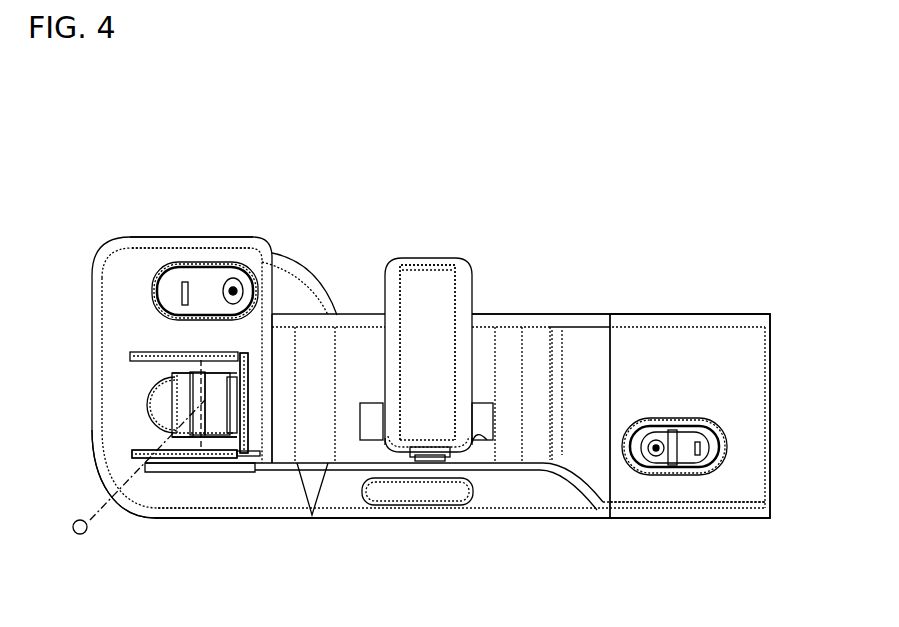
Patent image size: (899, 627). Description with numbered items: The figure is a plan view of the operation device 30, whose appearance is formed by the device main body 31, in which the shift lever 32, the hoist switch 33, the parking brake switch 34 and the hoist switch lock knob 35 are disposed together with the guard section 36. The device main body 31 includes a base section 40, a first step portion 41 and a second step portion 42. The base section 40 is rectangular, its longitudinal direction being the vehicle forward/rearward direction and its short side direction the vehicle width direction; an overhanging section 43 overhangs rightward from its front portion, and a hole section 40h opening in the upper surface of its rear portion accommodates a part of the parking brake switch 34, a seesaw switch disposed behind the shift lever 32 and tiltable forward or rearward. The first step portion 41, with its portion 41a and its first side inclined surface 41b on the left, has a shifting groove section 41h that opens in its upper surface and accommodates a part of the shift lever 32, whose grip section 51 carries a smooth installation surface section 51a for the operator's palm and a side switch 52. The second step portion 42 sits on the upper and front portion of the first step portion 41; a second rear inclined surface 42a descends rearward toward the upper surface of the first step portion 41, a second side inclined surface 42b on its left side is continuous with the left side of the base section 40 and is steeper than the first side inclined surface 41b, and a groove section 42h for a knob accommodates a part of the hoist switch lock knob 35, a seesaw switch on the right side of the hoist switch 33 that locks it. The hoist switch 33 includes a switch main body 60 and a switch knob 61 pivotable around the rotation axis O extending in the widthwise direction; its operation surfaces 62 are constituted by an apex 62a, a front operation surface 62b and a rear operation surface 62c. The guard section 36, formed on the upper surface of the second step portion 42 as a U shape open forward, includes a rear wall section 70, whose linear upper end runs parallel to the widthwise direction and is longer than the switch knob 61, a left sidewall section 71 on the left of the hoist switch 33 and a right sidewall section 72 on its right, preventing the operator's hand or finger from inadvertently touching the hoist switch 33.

The operation device 30 is at (773, 128).
The device main body 31 is at (663, 310).
The shift lever 32 is at (468, 261).
The hoist switch 33 is at (143, 426).
The parking brake switch 34 is at (673, 443).
The hoist switch lock knob 35 is at (208, 282).
The guard section 36 is at (157, 472).
The base section 40 is at (753, 483).
The hole section 40h is at (672, 466).
The first step portion 41 is at (350, 447).
The first bottom portion 41a is at (582, 440).
The first side inclined surface 41b is at (400, 505).
The shifting groove section 41h is at (492, 443).
The second step portion 42 is at (117, 380).
The second rear inclined surface 42a is at (285, 425).
The second side inclined surface 42b is at (213, 497).
The groove section for a knob 42h is at (181, 266).
The overhanging section 43 is at (160, 237).
The grip section 51 is at (427, 352).
The installation surface section 51a is at (433, 358).
The side switch 52 is at (428, 458).
The switch main body 60 is at (150, 397).
The switch knob 61 is at (193, 440).
The operation surfaces 62 is at (196, 405).
The apex 62a is at (203, 397).
The front operation surface 62b is at (175, 405).
The rear operation surface 62c is at (222, 403).
The rear wall section 70 is at (262, 432).
The left sidewall section 71 is at (180, 455).
The right sidewall section 72 is at (160, 350).